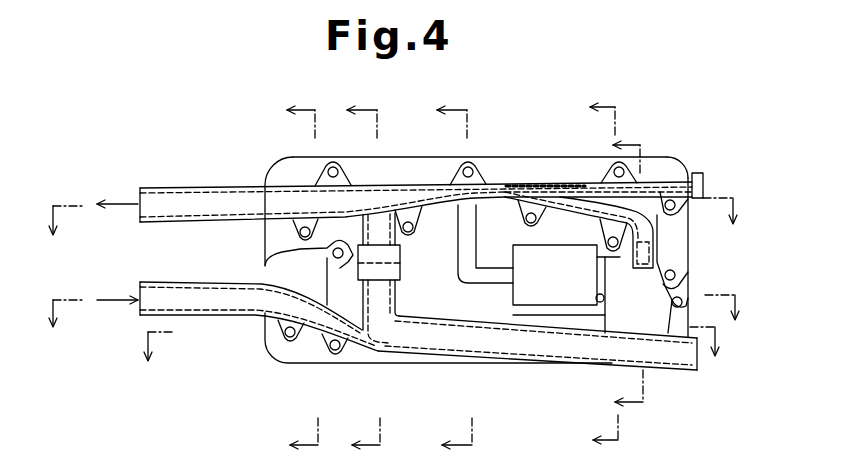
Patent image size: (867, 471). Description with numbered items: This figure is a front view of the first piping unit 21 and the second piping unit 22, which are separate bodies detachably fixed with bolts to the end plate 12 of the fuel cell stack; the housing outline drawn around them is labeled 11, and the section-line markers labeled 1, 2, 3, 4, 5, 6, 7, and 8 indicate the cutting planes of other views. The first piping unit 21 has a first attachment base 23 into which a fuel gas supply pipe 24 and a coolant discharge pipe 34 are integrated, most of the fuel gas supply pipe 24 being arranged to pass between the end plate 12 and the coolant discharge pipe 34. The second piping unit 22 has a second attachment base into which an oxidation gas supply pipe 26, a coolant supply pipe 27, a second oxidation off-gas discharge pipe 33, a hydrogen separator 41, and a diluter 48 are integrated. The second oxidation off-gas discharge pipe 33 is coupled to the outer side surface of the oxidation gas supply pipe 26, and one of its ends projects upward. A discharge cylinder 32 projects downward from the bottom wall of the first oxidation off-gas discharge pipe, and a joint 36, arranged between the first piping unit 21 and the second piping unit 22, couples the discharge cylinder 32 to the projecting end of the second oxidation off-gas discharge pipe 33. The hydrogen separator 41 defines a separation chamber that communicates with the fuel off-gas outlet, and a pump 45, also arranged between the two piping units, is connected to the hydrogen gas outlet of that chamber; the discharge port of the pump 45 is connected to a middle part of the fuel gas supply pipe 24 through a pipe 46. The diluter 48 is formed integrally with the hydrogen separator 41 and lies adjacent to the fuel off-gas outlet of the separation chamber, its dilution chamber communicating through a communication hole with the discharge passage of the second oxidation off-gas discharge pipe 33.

The section line I-I 1 is at (391, 216).
The section line II-II 2 is at (393, 311).
The section line III-III 3 is at (428, 344).
The section line IV-IV 4 is at (294, 277).
The section line V-V 5 is at (355, 277).
The section line VI-VI 6 is at (447, 277).
The section line VII-VII 7 is at (594, 273).
The section line VIII-VIII 8 is at (631, 277).
The case 11 is at (654, 155).
The end plate 12 is at (673, 162).
The first piping unit 21 is at (228, 183).
The second piping unit 22 is at (238, 323).
The first attachment base 23 is at (502, 182).
The fuel gas supply pipe 24 is at (703, 169).
The oxidation gas supply pipe 26 is at (163, 291).
The coolant supply pipe 27 is at (263, 263).
The discharge cylinder 32 is at (398, 252).
The second oxidation off-gas discharge pipe 33 is at (553, 354).
The coolant discharge pipe 34 is at (161, 197).
The joint 36 is at (400, 270).
The hydrogen separator 41 is at (661, 287).
The pump 45 is at (523, 293).
The pipe 46 is at (464, 252).
The diluter 48 is at (595, 322).